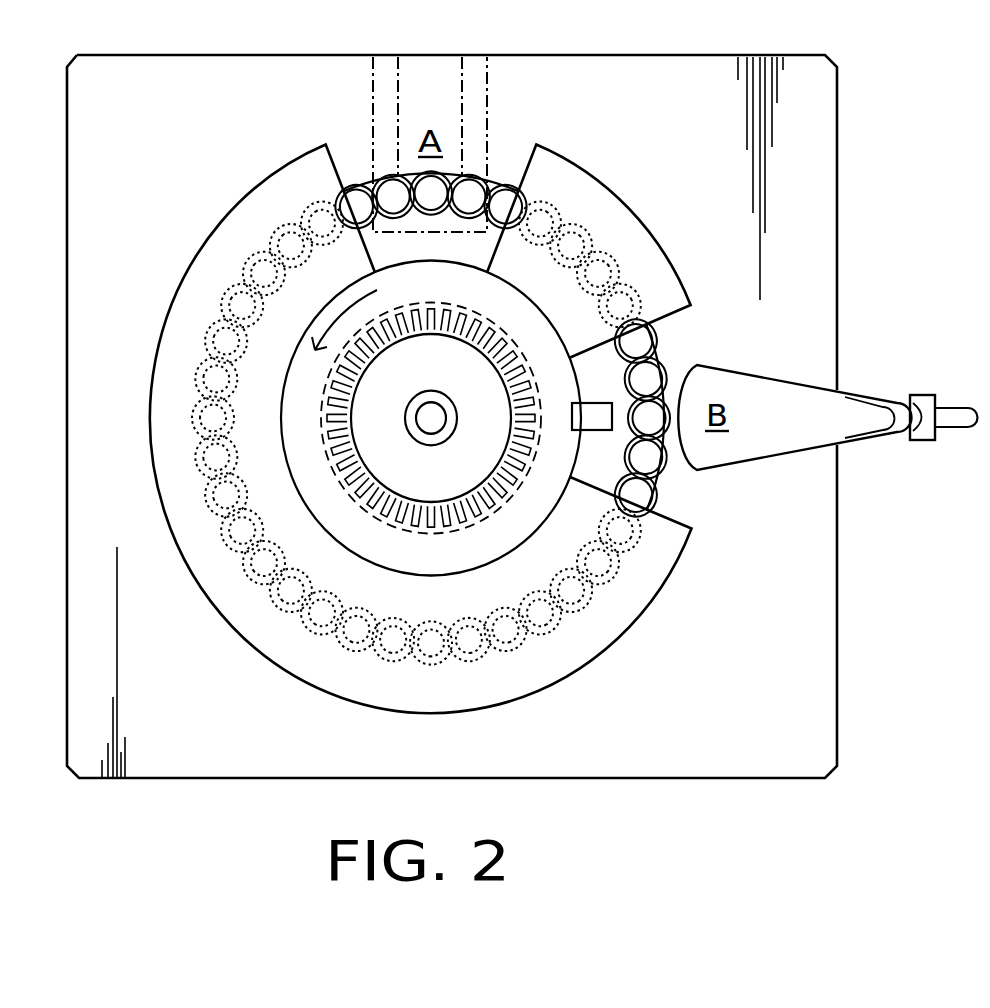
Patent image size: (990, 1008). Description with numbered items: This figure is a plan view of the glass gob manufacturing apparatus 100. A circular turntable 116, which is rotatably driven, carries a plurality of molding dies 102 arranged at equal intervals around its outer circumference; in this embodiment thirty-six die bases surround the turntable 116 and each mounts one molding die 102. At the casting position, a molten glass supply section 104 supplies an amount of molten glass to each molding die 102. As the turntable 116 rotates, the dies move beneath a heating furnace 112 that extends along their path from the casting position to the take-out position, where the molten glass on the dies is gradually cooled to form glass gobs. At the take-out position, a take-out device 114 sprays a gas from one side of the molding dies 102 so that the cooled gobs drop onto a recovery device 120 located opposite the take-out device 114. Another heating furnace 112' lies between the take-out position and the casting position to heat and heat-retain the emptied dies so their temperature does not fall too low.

The glass gob manufacturing apparatus 100 is at (864, 188).
The molding die 102 is at (472, 190).
The molten glass supply section 104 is at (372, 106).
The heating furnace 112 is at (421, 428).
The heating furnace 112' is at (591, 236).
The take-out device 114 is at (594, 403).
The turntable 116 is at (532, 510).
The recovery device 120 is at (884, 415).